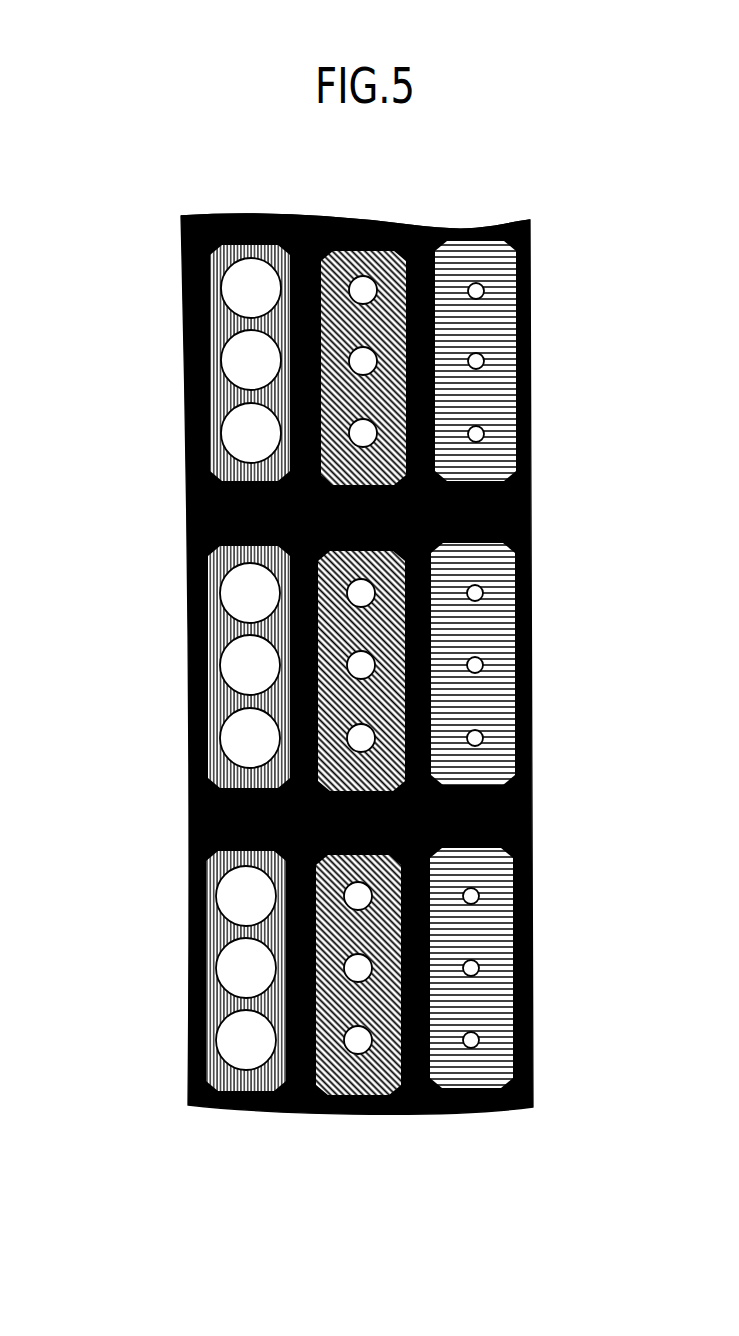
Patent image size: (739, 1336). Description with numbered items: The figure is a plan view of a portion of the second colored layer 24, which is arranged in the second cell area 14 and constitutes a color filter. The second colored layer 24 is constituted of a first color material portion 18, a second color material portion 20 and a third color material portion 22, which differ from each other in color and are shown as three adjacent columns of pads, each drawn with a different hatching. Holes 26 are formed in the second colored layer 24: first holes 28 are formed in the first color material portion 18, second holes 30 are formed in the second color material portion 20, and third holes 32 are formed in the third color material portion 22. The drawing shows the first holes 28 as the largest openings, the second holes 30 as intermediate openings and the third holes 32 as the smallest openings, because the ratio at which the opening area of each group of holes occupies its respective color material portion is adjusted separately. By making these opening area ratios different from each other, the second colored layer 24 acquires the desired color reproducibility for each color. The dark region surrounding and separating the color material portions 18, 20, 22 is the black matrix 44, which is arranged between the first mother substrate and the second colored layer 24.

The second cell area 14 is at (155, 657).
The first color material portion 18 is at (232, 1083).
The second color material portion 20 is at (350, 1087).
The third color material portion 22 is at (473, 711).
The second colored layer 24 is at (361, 733).
The holes 26 is at (445, 664).
The first holes 28 is at (238, 872).
The second holes 30 is at (353, 885).
The third holes 32 is at (462, 888).
The black matrix 44 is at (415, 217).